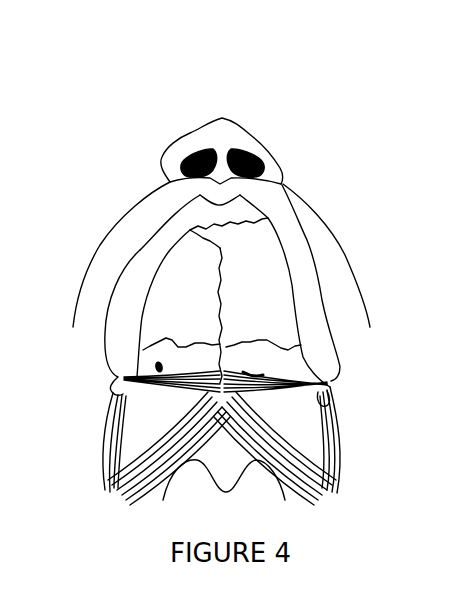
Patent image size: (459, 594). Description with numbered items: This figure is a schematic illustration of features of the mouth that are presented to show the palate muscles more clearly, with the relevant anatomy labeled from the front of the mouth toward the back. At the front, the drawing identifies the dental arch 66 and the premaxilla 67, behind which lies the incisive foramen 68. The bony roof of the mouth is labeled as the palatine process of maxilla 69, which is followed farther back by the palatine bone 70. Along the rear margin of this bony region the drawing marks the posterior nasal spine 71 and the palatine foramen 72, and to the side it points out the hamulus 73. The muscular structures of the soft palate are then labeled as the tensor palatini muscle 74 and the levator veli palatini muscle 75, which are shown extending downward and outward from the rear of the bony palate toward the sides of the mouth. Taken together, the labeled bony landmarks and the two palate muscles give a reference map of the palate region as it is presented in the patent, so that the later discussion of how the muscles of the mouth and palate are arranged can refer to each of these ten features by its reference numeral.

The dental arch 66 is at (247, 213).
The premaxilla 67 is at (268, 218).
The incisive foramen 68 is at (222, 243).
The palatine process of maxilla 69 is at (257, 277).
The palatine bone 70 is at (297, 353).
The posterior nasal spine 71 is at (282, 366).
The palatine foramen 72 is at (307, 376).
The hamulus 73 is at (318, 388).
The tensor palatini muscle 74 is at (330, 432).
The levator veli palatini muscle 75 is at (315, 464).